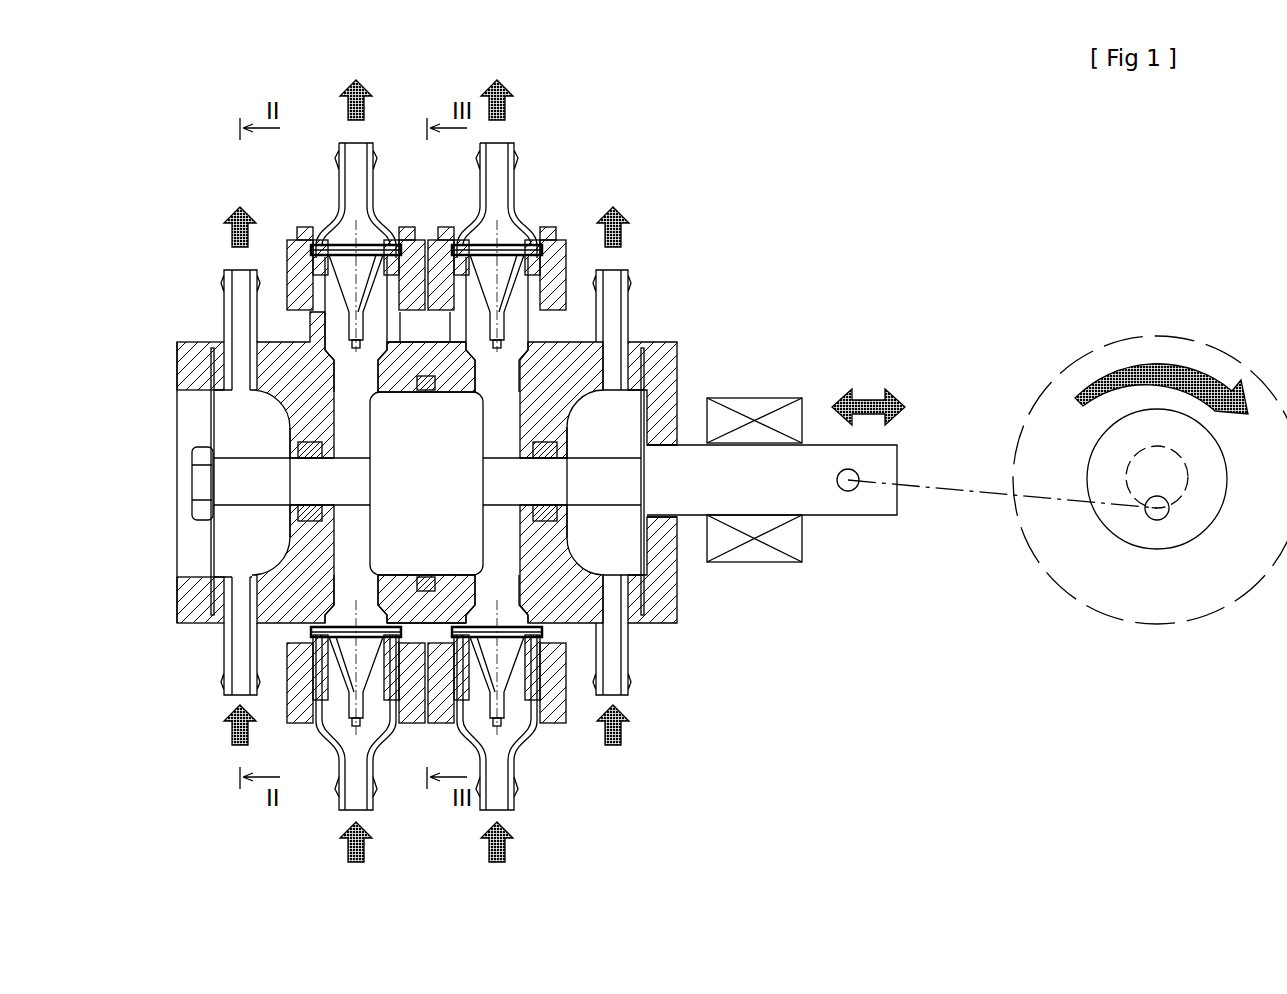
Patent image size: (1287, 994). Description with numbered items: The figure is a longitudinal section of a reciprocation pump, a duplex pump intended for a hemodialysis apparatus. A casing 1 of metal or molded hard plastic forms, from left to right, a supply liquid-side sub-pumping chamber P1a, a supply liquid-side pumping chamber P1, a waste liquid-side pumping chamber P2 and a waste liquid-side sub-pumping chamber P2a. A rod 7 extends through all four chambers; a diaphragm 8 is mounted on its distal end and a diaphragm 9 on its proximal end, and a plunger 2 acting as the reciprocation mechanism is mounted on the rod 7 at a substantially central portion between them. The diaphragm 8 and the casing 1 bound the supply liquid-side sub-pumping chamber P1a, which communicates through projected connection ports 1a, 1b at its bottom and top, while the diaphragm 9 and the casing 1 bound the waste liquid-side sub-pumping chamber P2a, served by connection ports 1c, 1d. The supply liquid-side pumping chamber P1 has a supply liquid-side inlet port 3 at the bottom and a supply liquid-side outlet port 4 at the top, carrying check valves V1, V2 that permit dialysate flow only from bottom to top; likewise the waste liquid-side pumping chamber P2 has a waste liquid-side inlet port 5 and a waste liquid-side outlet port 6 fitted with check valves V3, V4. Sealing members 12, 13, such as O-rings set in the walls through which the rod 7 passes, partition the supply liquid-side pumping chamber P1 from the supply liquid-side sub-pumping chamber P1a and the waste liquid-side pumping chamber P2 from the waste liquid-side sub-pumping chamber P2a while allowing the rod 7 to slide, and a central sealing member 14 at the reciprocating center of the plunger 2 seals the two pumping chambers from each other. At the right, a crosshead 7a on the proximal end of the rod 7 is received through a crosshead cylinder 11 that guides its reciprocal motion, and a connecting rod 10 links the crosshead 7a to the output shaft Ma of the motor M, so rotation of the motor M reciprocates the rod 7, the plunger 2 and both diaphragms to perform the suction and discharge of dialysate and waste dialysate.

The casing 1 is at (176, 346).
The connection port 1a is at (224, 661).
The connection port 1b is at (222, 320).
The connection port 1c is at (630, 665).
The connection port 1d is at (630, 300).
The plunger 2 is at (380, 547).
The supply liquid-side inlet port 3 is at (338, 772).
The supply liquid-side outlet port 4 is at (338, 178).
The waste liquid-side inlet port 5 is at (515, 785).
The waste liquid-side outlet port 6 is at (515, 160).
The rod 7 is at (215, 476).
The crosshead 7a is at (883, 512).
The diaphragm 8 is at (208, 412).
The diaphragm 9 is at (650, 378).
The connecting rod 10 is at (975, 512).
The crosshead cylinder 11 is at (770, 398).
The sealing member 12 is at (300, 512).
The sealing member 13 is at (560, 518).
The central sealing member 14 is at (427, 592).
The check valve V1 is at (352, 705).
The check valve V2 is at (312, 262).
The check valve V3 is at (505, 695).
The check valve V4 is at (520, 248).
The motor M is at (1222, 335).
The output shaft Ma is at (1092, 445).
The supply liquid-side sub-pumping chamber P1a is at (274, 449).
The supply liquid-side pumping chamber P1 is at (368, 449).
The waste liquid-side pumping chamber P2 is at (518, 449).
The waste liquid-side sub-pumping chamber P2a is at (629, 449).